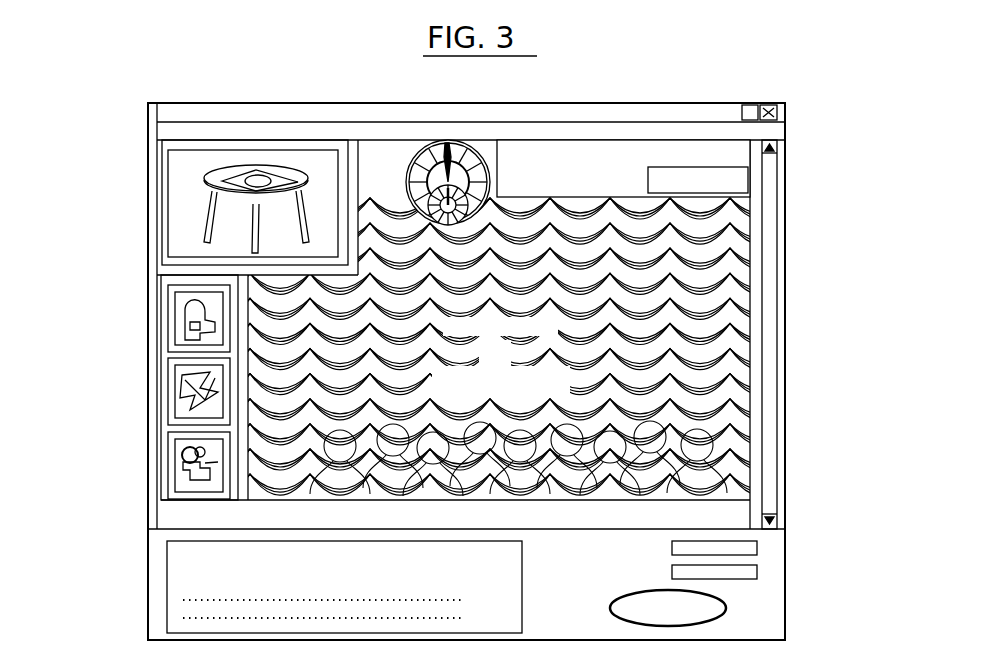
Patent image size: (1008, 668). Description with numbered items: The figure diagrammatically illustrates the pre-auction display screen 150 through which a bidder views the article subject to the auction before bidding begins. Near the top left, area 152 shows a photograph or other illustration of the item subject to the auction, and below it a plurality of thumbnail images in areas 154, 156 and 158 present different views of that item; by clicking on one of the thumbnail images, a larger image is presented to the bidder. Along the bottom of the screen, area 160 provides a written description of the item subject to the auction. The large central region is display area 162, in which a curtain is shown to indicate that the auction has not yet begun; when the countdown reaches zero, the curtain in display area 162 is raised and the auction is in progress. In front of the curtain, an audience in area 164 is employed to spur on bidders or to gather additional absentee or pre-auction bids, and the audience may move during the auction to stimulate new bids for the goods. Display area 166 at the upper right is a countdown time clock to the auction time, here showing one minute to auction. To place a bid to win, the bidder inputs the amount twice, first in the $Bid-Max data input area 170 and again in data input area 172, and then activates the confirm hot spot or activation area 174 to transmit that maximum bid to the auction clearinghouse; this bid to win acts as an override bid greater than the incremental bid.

The live auction display window 150 is at (842, 257).
The item illustration area 152 is at (125, 209).
The thumbnail image area 154 is at (125, 317).
The thumbnail image area 156 is at (125, 392).
The thumbnail image area 158 is at (125, 456).
The written description area 160 is at (137, 552).
The curtain display area 162 is at (797, 202).
The audience area 164 is at (797, 433).
The countdown time clock display area 166 is at (713, 167).
The $Bid-Max data input area 170 is at (757, 543).
The data input area 172 is at (757, 567).
The confirm activation area 174 is at (726, 600).